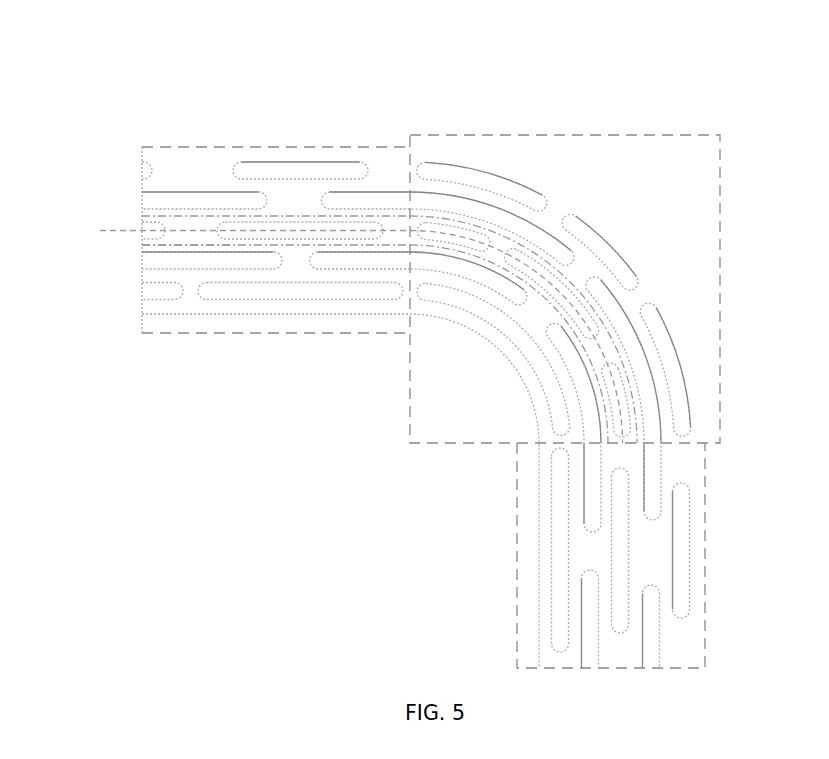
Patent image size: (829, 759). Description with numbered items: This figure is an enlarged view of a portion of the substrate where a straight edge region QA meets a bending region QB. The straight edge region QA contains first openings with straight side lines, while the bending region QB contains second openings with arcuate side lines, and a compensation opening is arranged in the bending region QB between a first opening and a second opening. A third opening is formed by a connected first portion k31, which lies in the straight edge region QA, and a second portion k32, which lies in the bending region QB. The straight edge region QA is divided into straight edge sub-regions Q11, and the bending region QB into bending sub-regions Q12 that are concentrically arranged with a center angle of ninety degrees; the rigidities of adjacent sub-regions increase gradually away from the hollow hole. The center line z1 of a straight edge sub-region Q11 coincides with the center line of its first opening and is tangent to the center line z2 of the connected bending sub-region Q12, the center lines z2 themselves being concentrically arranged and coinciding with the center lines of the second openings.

The straight edge region QA is at (193, 333).
The bending region QB is at (413, 444).
The first portion k31 is at (375, 262).
The second portion k32 is at (490, 277).
The center line of the straight edge sub-region z1 is at (124, 222).
The center line of the bending sub-region z2 is at (612, 341).
The straight edge sub-region Q11 is at (152, 252).
The bending sub-region Q12 is at (587, 278).